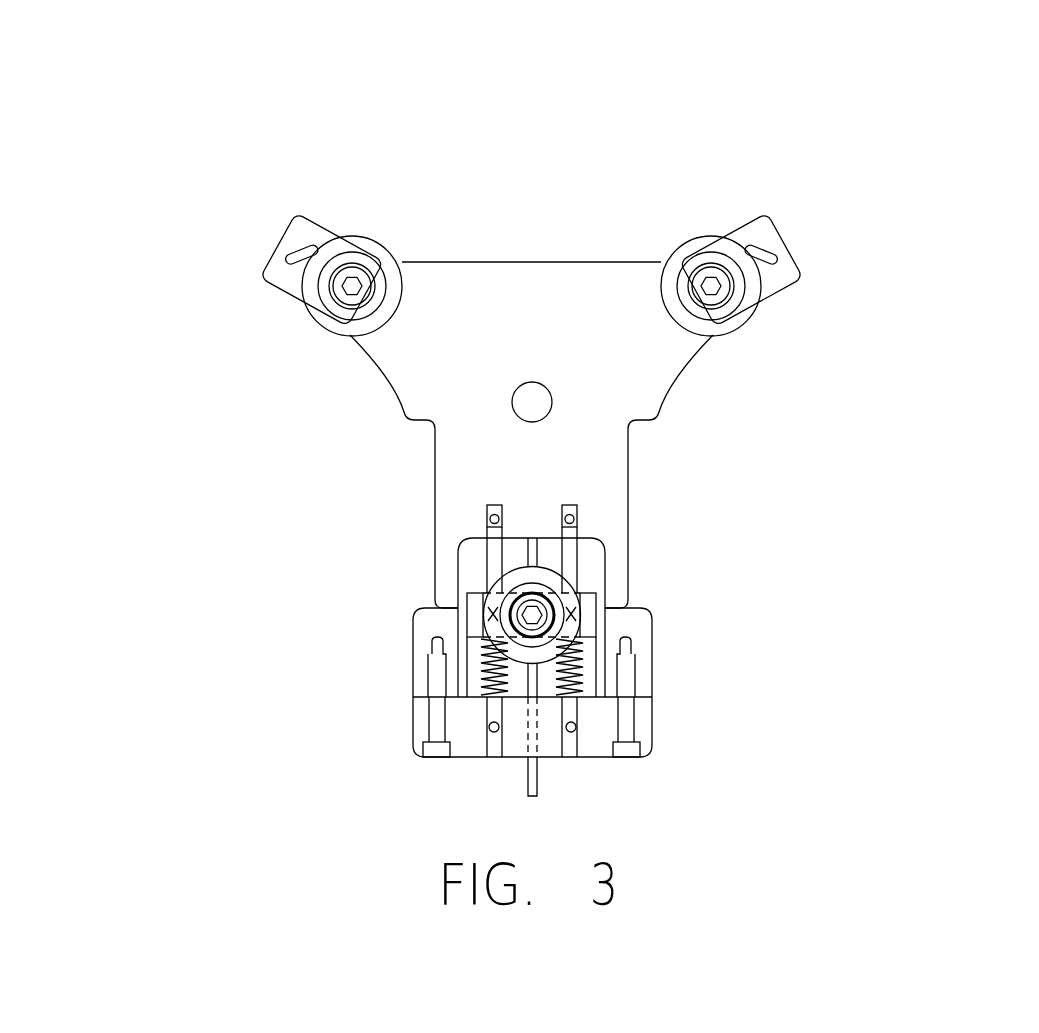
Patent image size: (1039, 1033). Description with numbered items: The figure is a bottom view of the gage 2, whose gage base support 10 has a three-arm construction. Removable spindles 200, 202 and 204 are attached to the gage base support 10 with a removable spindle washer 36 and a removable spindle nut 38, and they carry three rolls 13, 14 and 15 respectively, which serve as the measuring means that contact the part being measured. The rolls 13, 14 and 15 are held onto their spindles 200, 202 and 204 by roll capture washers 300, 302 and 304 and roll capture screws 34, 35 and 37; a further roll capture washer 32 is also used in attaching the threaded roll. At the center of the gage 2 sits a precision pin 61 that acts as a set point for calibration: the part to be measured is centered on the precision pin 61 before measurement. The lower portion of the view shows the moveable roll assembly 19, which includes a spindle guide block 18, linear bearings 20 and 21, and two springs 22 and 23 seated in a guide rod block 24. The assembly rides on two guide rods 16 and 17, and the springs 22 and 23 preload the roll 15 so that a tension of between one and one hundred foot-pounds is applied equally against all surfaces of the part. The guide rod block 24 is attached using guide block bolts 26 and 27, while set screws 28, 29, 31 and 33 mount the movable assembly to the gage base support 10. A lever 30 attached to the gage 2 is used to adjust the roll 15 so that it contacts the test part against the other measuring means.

The gage 2 is at (653, 151).
The gage base support 10 is at (672, 435).
The roll 13 is at (209, 243).
The roll 14 is at (876, 328).
The roll 15 is at (304, 530).
The guide rod 16 is at (301, 534).
The guide rod 17 is at (787, 512).
The spindle guide block 18 is at (348, 556).
The moveable roll assembly 19 is at (286, 566).
The linear bearing 20 is at (739, 615).
The linear bearing 21 is at (295, 545).
The spring 22 is at (275, 697).
The spring 23 is at (775, 723).
The guide rod block 24 is at (376, 683).
The guide block bolt 26 is at (270, 803).
The guide block bolt 27 is at (803, 746).
The set screw 28 is at (780, 807).
The set screw 29 is at (300, 757).
The lever 30 is at (761, 734).
The set screw 31 is at (294, 392).
The roll capture washer 32 is at (208, 200).
The set screw 33 is at (778, 585).
The roll capture screw 34 is at (865, 219).
The roll capture screw 35 is at (242, 216).
The removable spindle washer 36 is at (837, 211).
The roll capture screw 37 is at (791, 697).
The removable spindle nut 38 is at (792, 657).
The precision pin 61 is at (423, 248).
The spindle 200 is at (836, 286).
The spindle 202 is at (201, 221).
The spindle 204 is at (725, 617).
The roll capture washer 300 is at (251, 188).
The roll capture washer 302 is at (878, 240).
The roll capture washer 304 is at (275, 630).